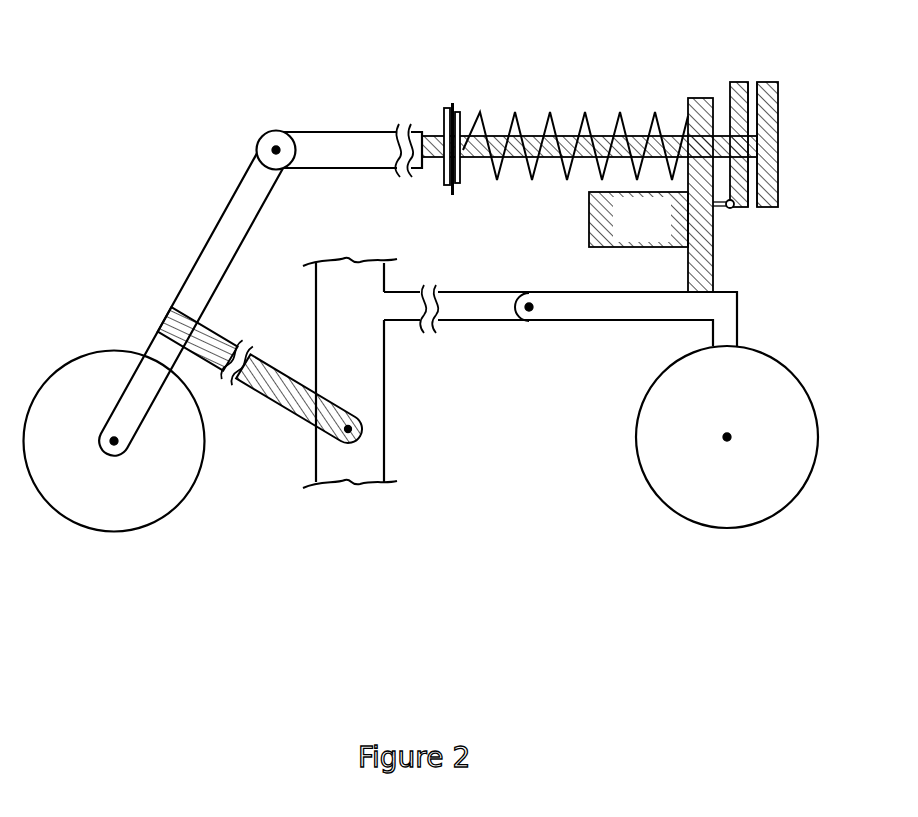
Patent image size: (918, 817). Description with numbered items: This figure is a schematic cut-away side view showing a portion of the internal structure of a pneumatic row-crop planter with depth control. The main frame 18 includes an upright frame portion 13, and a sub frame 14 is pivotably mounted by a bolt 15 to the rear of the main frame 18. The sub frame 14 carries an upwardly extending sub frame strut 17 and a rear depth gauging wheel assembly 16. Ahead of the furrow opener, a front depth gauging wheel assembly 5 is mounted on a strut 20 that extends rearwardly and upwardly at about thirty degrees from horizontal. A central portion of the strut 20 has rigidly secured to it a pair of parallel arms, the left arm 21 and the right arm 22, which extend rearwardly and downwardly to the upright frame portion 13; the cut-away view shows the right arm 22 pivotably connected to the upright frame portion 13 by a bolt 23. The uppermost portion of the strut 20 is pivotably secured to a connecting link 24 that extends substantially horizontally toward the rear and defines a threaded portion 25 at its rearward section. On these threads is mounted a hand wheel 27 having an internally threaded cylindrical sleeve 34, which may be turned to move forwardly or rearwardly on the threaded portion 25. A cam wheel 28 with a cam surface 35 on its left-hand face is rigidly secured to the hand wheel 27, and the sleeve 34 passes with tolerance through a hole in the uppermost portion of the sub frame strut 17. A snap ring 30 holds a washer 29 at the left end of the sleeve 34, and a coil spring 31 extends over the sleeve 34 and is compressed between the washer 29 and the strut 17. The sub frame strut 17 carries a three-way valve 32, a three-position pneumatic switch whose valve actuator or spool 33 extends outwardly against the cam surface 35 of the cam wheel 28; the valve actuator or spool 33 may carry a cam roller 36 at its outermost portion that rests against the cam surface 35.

The front depth gauging wheel assembly 5 is at (162, 518).
The upright frame portion 13 is at (386, 278).
The sub frame 14 is at (657, 321).
The bolt 15 is at (532, 314).
The rear depth gauging wheel assembly 16 is at (665, 507).
The sub frame strut 17 is at (700, 98).
The main frame 18 is at (472, 321).
The strut 20 is at (208, 243).
The left arm 21 is at (217, 334).
The right arm 22 is at (292, 413).
The bolt 23 is at (355, 437).
The connecting link 24 is at (256, 143).
The threaded portion 25 is at (425, 133).
The hand wheel 27 is at (780, 90).
The cam wheel 28 is at (752, 82).
The washer 29 is at (477, 86).
The snap ring 30 is at (446, 112).
The coil spring 31 is at (535, 180).
The 3-way valve 32 is at (587, 215).
The valve actuator or spool 33 is at (722, 213).
The internally threaded cylindrical sleeve 34 is at (605, 130).
The cam surface 35 is at (732, 83).
The cam roller 36 is at (735, 208).